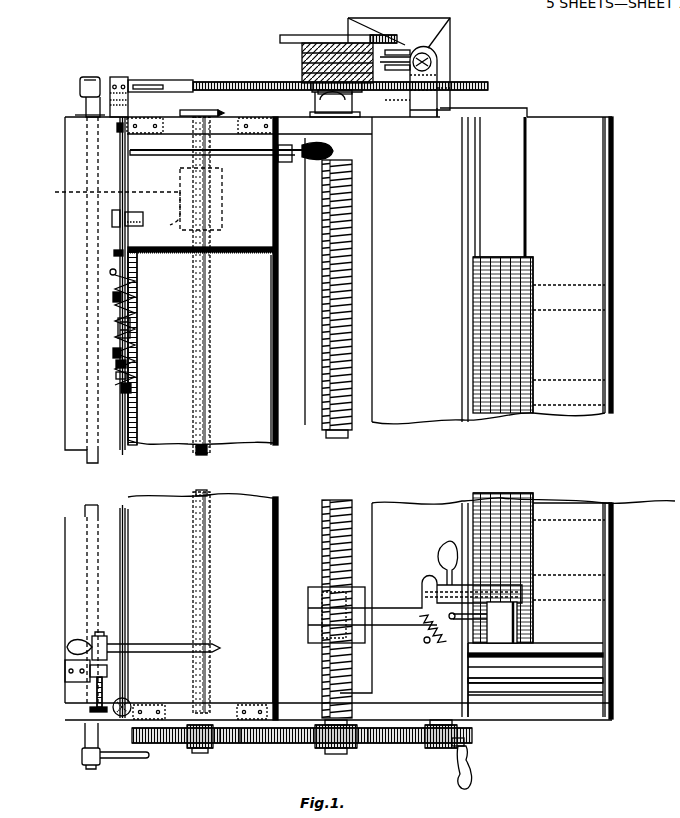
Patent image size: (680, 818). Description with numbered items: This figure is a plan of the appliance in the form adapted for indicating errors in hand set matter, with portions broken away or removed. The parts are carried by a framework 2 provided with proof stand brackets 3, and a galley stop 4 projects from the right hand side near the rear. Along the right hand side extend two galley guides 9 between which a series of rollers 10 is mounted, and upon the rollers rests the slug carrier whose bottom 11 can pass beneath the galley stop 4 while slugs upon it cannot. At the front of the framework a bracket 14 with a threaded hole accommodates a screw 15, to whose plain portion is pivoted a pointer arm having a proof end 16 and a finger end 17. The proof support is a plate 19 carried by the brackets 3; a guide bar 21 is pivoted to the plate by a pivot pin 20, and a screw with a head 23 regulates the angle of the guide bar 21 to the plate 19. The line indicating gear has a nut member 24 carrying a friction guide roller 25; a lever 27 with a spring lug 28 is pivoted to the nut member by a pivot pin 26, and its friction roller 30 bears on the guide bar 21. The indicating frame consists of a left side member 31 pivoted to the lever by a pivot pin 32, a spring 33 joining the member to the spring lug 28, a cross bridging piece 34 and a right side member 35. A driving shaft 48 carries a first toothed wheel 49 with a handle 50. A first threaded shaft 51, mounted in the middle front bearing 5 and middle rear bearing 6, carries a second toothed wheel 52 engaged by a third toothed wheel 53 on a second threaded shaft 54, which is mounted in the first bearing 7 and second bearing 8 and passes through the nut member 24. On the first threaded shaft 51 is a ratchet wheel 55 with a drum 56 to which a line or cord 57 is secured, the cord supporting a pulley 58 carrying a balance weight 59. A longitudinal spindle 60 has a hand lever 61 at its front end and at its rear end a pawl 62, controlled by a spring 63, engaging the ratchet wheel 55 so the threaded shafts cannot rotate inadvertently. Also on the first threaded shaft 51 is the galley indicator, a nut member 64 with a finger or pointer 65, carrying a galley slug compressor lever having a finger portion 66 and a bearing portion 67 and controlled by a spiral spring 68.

The framework 2 is at (328, 414).
The proof stand brackets 3 is at (150, 108).
The galley stop 4 is at (490, 187).
The middle front bearing 5 is at (369, 745).
The middle rear bearing 6 is at (318, 108).
The first bearing 7 is at (221, 743).
The second bearing 8 is at (215, 110).
The galley guides 9 is at (456, 426).
The rollers 10 is at (539, 475).
The bottom 11 is at (569, 418).
The bracket 14 is at (65, 680).
The screw 15 is at (90, 710).
The proof end 16 is at (165, 640).
The finger end 17 is at (67, 647).
The plate 19 is at (200, 410).
The pivot pin 20 is at (117, 127).
The guide bar 21 is at (122, 455).
The head 23 is at (120, 716).
The nut member 24 is at (125, 199).
The friction guide roller 25 is at (120, 245).
The pivot pin 26 is at (112, 220).
The lever 27 is at (115, 253).
The spring lug 28 is at (113, 277).
The friction roller 30 is at (118, 328).
The left side member 31 is at (125, 388).
The pivot pin 32 is at (115, 365).
The spring 33 is at (115, 297).
The cross bridging piece 34 is at (171, 253).
The right side member 35 is at (271, 339).
The driving shaft 48 is at (437, 749).
The first toothed wheel 49 is at (464, 743).
The handle 50 is at (470, 782).
The first threaded shaft 51 is at (305, 92).
The second toothed wheel 52 is at (392, 745).
The third toothed wheel 53 is at (248, 745).
The second threaded shaft 54 is at (206, 455).
The ratchet wheel 55 is at (212, 82).
The drum 56 is at (283, 36).
The line or cord 57 is at (315, 43).
The pulley 58 is at (432, 58).
The balance weight 59 is at (447, 100).
The longitudinal spindle 60 is at (80, 108).
The hand lever 61 is at (135, 758).
The pawl 62 is at (168, 80).
The spring 63 is at (137, 83).
The nut member 64 is at (358, 592).
The finger or pointer 65 is at (455, 622).
The finger portion 66 is at (437, 562).
The bearing portion 67 is at (443, 610).
The spiral spring 68 is at (425, 641).